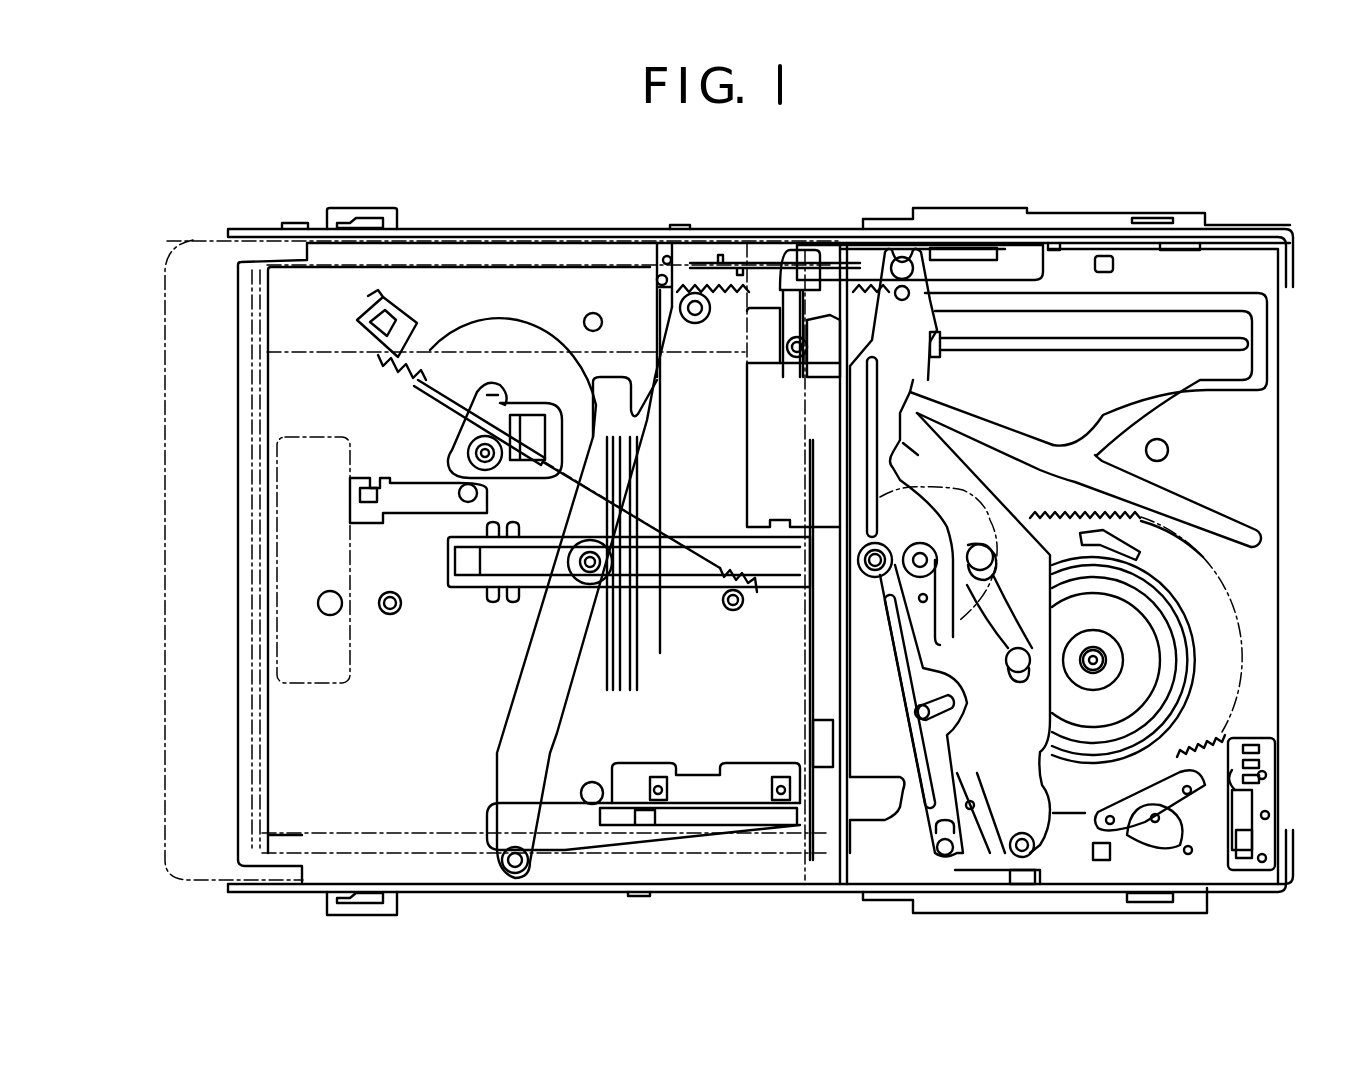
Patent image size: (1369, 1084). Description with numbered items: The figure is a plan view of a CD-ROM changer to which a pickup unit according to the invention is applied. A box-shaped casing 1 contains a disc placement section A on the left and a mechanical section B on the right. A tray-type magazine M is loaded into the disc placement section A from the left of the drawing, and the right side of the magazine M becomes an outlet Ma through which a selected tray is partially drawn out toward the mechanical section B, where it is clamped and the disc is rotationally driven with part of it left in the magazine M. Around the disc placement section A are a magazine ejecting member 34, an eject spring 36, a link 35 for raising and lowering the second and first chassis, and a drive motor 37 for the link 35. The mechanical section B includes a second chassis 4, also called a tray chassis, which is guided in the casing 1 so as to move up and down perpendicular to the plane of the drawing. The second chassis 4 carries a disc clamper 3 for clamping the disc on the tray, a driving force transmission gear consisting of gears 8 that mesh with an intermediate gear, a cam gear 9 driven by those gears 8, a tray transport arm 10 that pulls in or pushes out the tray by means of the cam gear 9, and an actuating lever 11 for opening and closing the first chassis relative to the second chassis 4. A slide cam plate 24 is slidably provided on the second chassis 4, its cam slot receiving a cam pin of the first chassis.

The tray-type magazine M is at (203, 280).
The disc placement section A is at (530, 265).
The mechanical section B is at (1213, 270).
The casing 1 is at (1250, 883).
The disc clamper 3 is at (958, 488).
The second chassis 4 is at (1250, 416).
The gears 8 is at (1127, 837).
The cam gear 9 is at (1222, 642).
The tray transport arm 10 is at (1040, 887).
The actuating lever 11 is at (877, 325).
The slide cam plate 24 is at (1033, 268).
The magazine ejecting member 34 is at (475, 582).
The link 35 is at (520, 723).
The eject spring 36 is at (415, 395).
The drive motor 37 is at (763, 440).
The outlet Ma is at (835, 838).